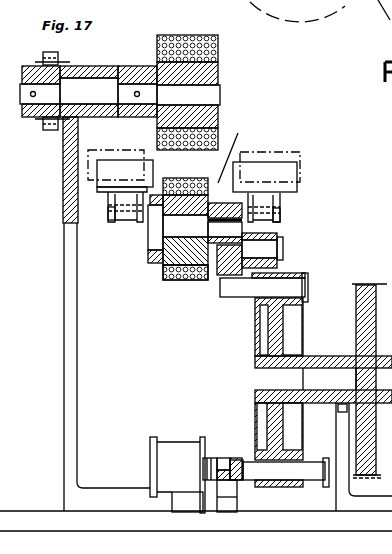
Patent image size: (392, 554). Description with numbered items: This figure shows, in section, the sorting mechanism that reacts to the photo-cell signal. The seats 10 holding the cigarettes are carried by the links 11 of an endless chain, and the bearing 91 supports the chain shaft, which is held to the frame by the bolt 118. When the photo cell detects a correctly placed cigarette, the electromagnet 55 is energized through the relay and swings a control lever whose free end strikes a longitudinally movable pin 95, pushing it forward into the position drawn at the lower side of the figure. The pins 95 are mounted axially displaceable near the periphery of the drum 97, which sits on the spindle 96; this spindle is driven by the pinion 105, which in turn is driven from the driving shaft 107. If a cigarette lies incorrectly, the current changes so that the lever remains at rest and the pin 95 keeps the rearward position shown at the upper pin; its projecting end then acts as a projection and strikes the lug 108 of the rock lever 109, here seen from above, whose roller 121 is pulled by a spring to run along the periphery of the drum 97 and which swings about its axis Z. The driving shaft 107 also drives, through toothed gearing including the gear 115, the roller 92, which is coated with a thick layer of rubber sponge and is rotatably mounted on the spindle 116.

The driving shaft 107 is at (330, 0).
The bolt 118 is at (45, 157).
The bearing 91 is at (268, 61).
The seat 10 is at (133, 167).
The link 11 is at (112, 218).
The rock lever 109 is at (260, 133).
The axis Z is at (257, 163).
The spindle 116 is at (170, 227).
The toothed gearing 115 is at (152, 262).
The roller 92 is at (178, 282).
The lug 108 is at (218, 278).
The roller 121 is at (277, 236).
The pin 95 is at (247, 290).
The drum 97 is at (272, 325).
The spindle 96 is at (265, 377).
The pinion 105 is at (358, 305).
The electromagnet 55 is at (160, 453).